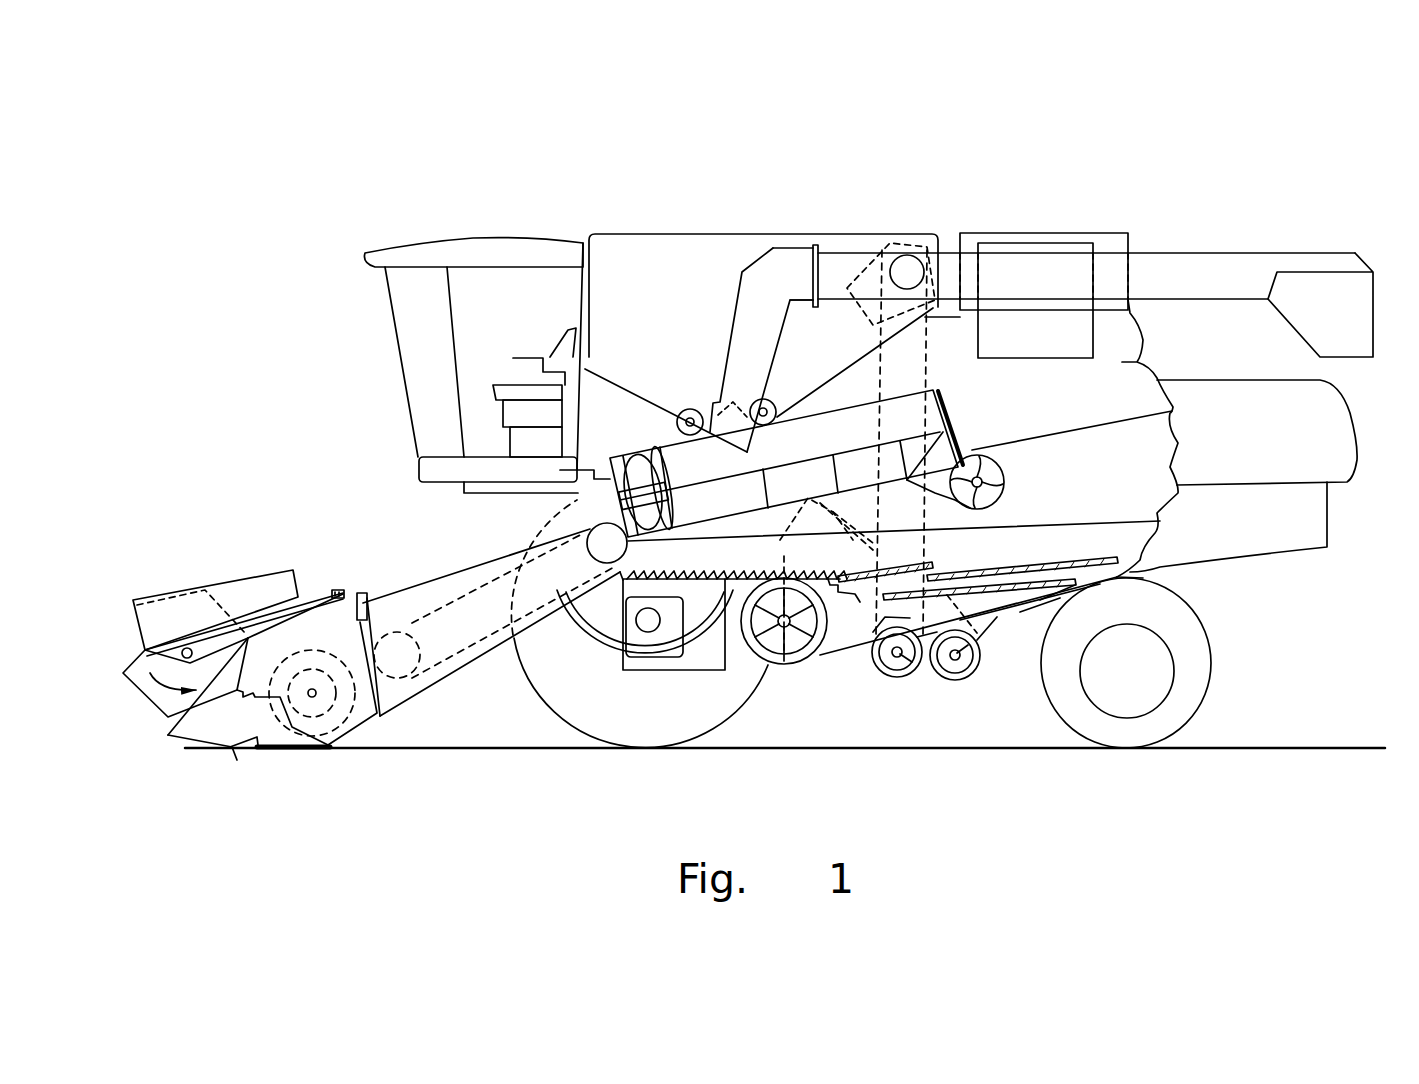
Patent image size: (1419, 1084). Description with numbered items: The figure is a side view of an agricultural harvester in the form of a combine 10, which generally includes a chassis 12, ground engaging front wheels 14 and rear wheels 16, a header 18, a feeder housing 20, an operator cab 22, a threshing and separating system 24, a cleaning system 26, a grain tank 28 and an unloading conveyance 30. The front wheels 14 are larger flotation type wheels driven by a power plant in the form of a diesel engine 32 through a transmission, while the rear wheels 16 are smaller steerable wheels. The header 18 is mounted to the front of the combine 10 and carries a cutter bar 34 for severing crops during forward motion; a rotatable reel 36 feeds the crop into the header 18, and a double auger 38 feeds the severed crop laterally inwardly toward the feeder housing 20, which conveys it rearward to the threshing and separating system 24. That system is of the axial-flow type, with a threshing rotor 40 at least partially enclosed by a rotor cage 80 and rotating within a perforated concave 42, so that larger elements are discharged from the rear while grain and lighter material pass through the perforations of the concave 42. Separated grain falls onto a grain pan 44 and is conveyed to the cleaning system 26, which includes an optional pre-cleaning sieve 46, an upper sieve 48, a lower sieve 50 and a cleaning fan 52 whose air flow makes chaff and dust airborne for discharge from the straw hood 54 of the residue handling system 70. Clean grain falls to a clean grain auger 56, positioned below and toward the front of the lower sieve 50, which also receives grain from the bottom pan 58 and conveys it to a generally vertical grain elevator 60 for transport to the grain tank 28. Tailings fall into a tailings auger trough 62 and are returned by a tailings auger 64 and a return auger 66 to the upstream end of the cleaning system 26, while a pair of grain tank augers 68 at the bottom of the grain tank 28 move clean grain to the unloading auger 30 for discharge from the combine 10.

The combine 10 is at (463, 218).
The chassis 12 is at (1133, 577).
The front wheels 14 is at (549, 706).
The rear wheels 16 is at (1203, 688).
The header 18 is at (221, 567).
The feeder housing 20 is at (440, 574).
The operator cab 22 is at (400, 340).
The threshing and separating system 24 is at (553, 505).
The cleaning system 26 is at (841, 690).
The grain tank 28 is at (640, 240).
The unloading conveyance 30 is at (1220, 256).
The diesel engine 32 is at (1026, 243).
The cutter bar 34 is at (241, 749).
The rotatable reel 36 is at (127, 637).
The double auger 38 is at (315, 720).
The threshing rotor 40 is at (640, 468).
The perforated concave 42 is at (812, 468).
The grain pan 44 is at (622, 592).
The pre-cleaning sieve 46 is at (937, 565).
The upper sieve 48 is at (1037, 564).
The lower sieve 50 is at (1002, 590).
The cleaning fan 52 is at (787, 655).
The straw hood 54 is at (1337, 423).
The clean grain auger 56 is at (900, 667).
The bottom pan 58 is at (1057, 607).
The grain elevator 60 is at (942, 366).
The tailings auger trough 62 is at (1037, 607).
The tailings auger 64 is at (953, 672).
The return auger 66 is at (865, 545).
The grain tank augers 68 is at (689, 408).
The residue handling system 70 is at (1296, 562).
The rotor cage 80 is at (680, 432).